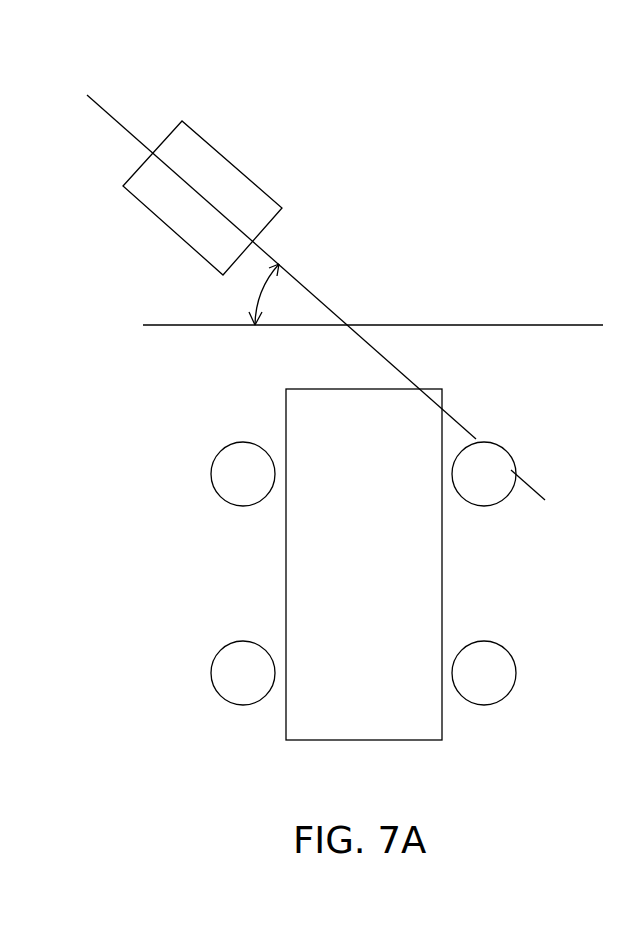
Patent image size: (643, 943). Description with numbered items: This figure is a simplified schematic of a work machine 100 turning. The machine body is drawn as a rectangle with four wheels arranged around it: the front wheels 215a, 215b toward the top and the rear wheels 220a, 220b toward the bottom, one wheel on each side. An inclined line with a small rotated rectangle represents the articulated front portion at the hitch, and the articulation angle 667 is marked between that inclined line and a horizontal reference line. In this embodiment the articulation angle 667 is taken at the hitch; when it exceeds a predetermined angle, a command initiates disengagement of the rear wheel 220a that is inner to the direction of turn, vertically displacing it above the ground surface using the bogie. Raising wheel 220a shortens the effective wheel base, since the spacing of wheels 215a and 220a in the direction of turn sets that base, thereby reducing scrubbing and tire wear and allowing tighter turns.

The work machine 100 is at (403, 148).
The articulation angle 667 is at (258, 292).
The wheel 215a is at (235, 465).
The wheel 215b is at (494, 462).
The rear wheel 220a is at (237, 670).
The rear wheel 220b is at (490, 652).